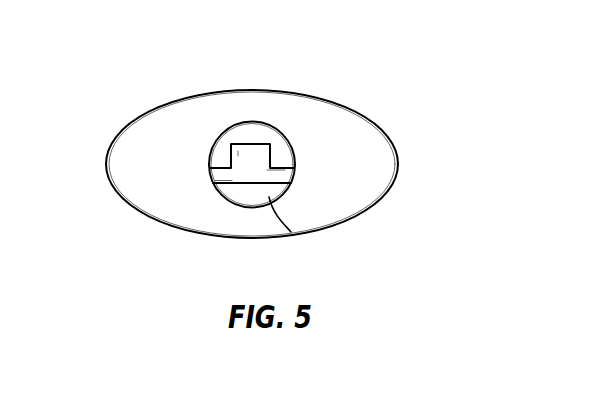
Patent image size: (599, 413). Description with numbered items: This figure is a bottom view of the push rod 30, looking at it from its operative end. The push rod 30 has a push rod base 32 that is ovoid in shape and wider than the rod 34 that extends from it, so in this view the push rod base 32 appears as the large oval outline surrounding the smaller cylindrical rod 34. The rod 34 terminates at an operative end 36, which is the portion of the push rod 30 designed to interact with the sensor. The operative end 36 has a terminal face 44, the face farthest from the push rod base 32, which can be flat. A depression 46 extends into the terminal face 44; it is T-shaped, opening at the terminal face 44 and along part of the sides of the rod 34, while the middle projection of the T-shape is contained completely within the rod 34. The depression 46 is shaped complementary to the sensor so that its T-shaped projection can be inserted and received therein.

The push rod 30 is at (270, 164).
The push rod base 32 is at (357, 203).
The rod 34 is at (277, 125).
The operative end 36 is at (291, 232).
The terminal face 44 is at (239, 188).
The depression 46 is at (248, 147).